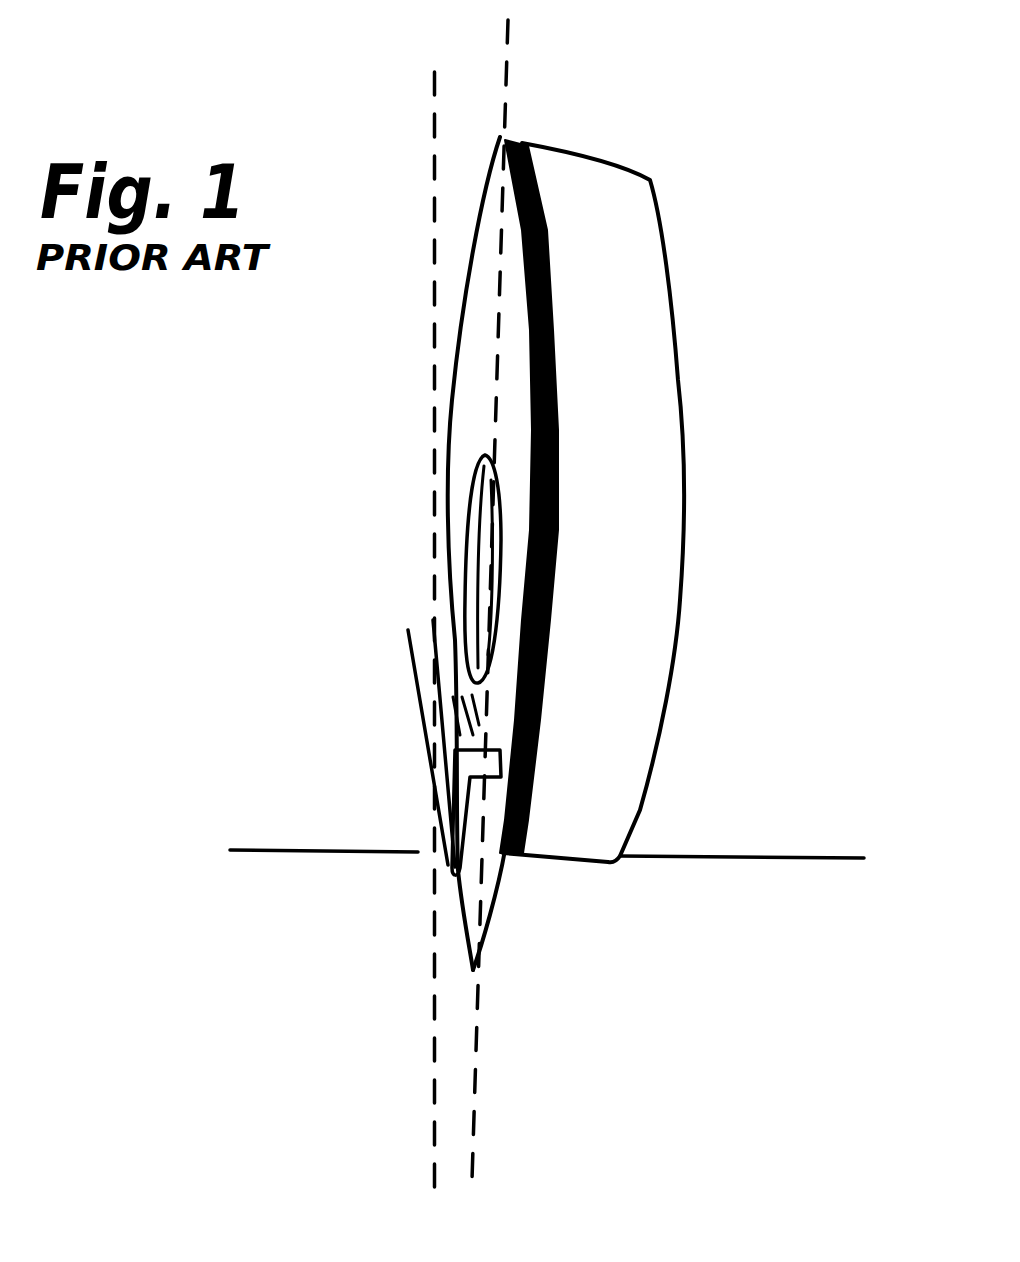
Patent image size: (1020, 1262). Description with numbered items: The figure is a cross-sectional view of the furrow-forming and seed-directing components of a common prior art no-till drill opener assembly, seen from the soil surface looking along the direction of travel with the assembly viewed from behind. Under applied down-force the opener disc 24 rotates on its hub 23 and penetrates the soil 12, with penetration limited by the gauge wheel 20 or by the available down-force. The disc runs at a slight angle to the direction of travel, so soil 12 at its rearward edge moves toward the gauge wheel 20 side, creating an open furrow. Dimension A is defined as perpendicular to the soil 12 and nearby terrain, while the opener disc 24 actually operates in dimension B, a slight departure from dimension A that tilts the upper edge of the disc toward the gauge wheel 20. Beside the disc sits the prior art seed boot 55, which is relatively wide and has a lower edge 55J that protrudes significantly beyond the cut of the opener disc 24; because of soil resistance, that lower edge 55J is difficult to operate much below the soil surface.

The soil 12 is at (830, 857).
The gauge wheel 20 is at (678, 293).
The hub 23 is at (469, 492).
The opener disc 24 is at (458, 349).
The prior art seed boot 55 is at (419, 699).
The lower edge 55J is at (447, 857).
The dimension A is at (437, 151).
The dimension B is at (505, 82).